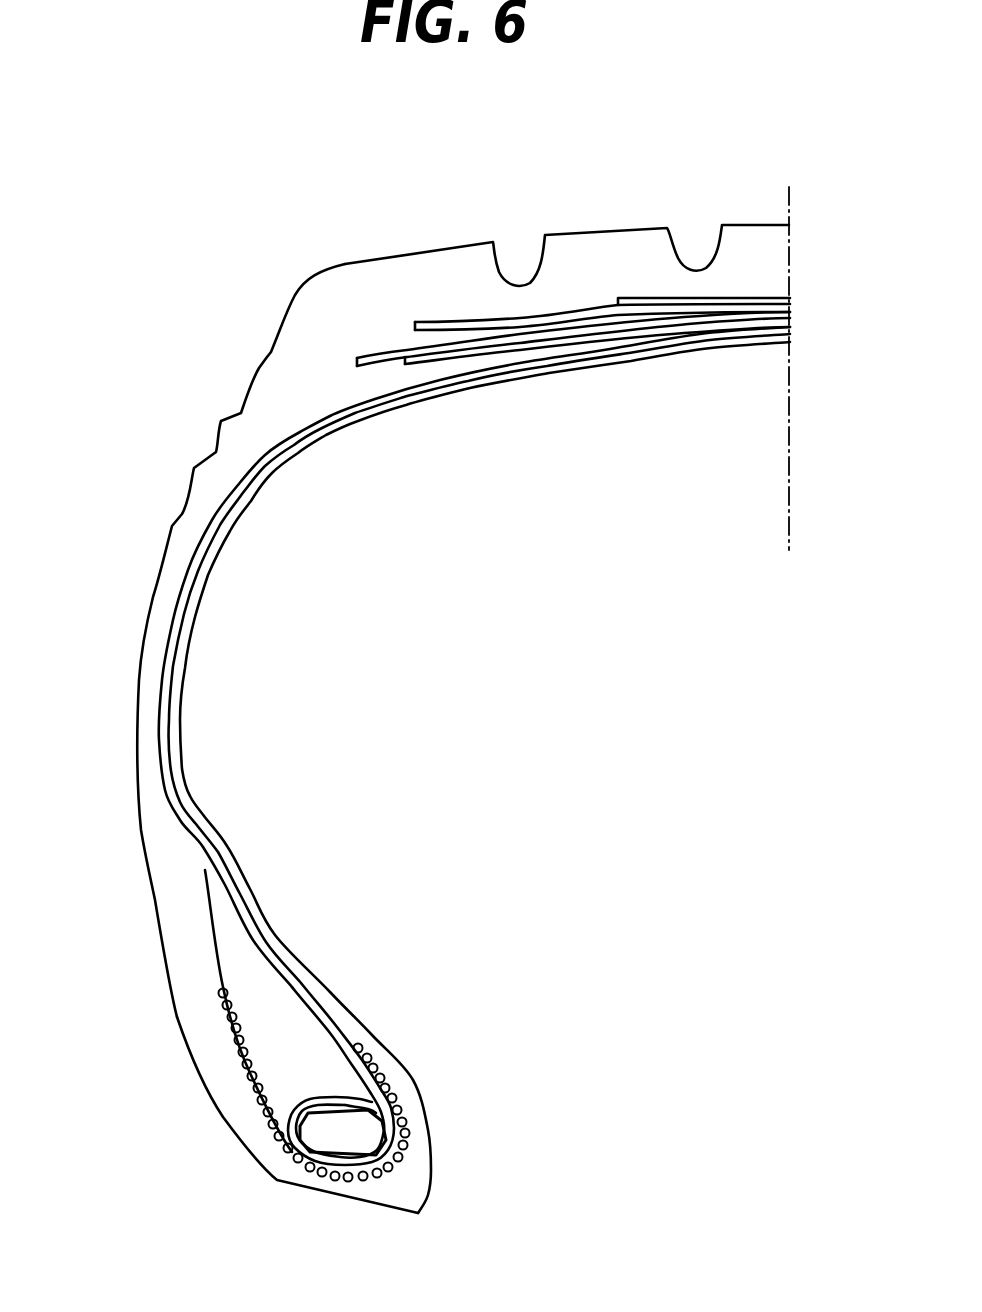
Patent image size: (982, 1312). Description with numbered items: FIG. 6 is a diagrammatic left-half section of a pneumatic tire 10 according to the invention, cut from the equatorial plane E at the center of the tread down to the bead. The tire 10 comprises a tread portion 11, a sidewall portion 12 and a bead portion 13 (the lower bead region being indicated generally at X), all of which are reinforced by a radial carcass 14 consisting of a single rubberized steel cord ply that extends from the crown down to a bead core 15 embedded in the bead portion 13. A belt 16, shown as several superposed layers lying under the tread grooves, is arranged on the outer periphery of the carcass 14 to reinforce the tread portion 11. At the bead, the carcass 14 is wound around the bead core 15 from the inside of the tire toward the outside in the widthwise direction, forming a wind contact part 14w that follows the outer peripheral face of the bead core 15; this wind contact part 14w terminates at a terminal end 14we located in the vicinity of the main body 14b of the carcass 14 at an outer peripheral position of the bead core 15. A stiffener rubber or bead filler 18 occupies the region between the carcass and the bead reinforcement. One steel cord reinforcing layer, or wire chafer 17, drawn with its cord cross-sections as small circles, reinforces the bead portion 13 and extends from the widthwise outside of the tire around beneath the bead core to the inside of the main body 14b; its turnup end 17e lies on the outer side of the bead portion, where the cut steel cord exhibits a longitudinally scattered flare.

The pneumatic tire 10 is at (414, 628).
The tread portion 11 is at (585, 219).
The sidewall portion 12 is at (128, 651).
The bead portion 13 is at (185, 1074).
The radial carcass 14 is at (199, 612).
The main body of the carcass 14b is at (213, 857).
The wind contact part 14w is at (335, 1092).
The terminal end of the wind contact part 14we is at (378, 1111).
The bead core 15 is at (333, 1135).
The belt 16 is at (742, 285).
The steel cord reinforcing layer (wire chafer) 17 is at (262, 1100).
The turnup end of the wire chafer 17e is at (223, 990).
The stiffener rubber (bead filler) 18 is at (282, 1033).
The equatorial plane E is at (789, 210).
The bead region X is at (146, 1101).